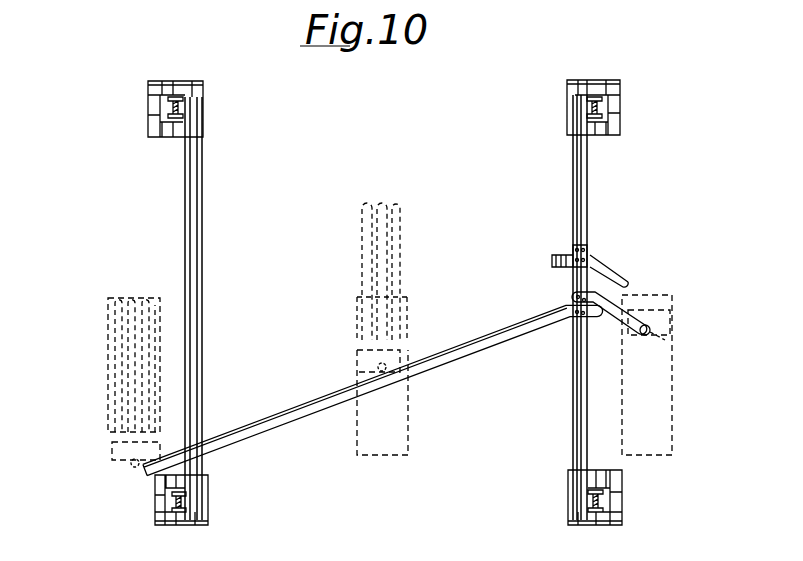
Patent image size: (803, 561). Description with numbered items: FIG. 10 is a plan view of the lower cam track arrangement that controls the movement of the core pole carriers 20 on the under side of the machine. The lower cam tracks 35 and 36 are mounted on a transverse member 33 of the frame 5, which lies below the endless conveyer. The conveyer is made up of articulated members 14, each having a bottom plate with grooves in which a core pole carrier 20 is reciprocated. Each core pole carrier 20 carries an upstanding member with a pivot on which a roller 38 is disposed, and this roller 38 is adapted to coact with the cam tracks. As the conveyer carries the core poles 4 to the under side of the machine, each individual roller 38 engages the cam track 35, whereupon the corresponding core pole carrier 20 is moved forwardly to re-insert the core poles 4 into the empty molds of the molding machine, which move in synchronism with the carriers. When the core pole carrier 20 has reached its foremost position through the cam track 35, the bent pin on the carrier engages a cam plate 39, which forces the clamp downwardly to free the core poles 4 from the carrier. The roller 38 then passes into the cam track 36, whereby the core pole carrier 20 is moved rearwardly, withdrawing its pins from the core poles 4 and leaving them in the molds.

The core pole 4 is at (108, 322).
The frame 5 is at (170, 106).
The articulated member 14 is at (108, 412).
The core pole carrier 20 is at (114, 450).
The transverse member 33 is at (201, 392).
The cam track 35 is at (446, 352).
The cam track 36 is at (651, 328).
The roller 38 is at (133, 466).
The cam plate 39 is at (554, 261).